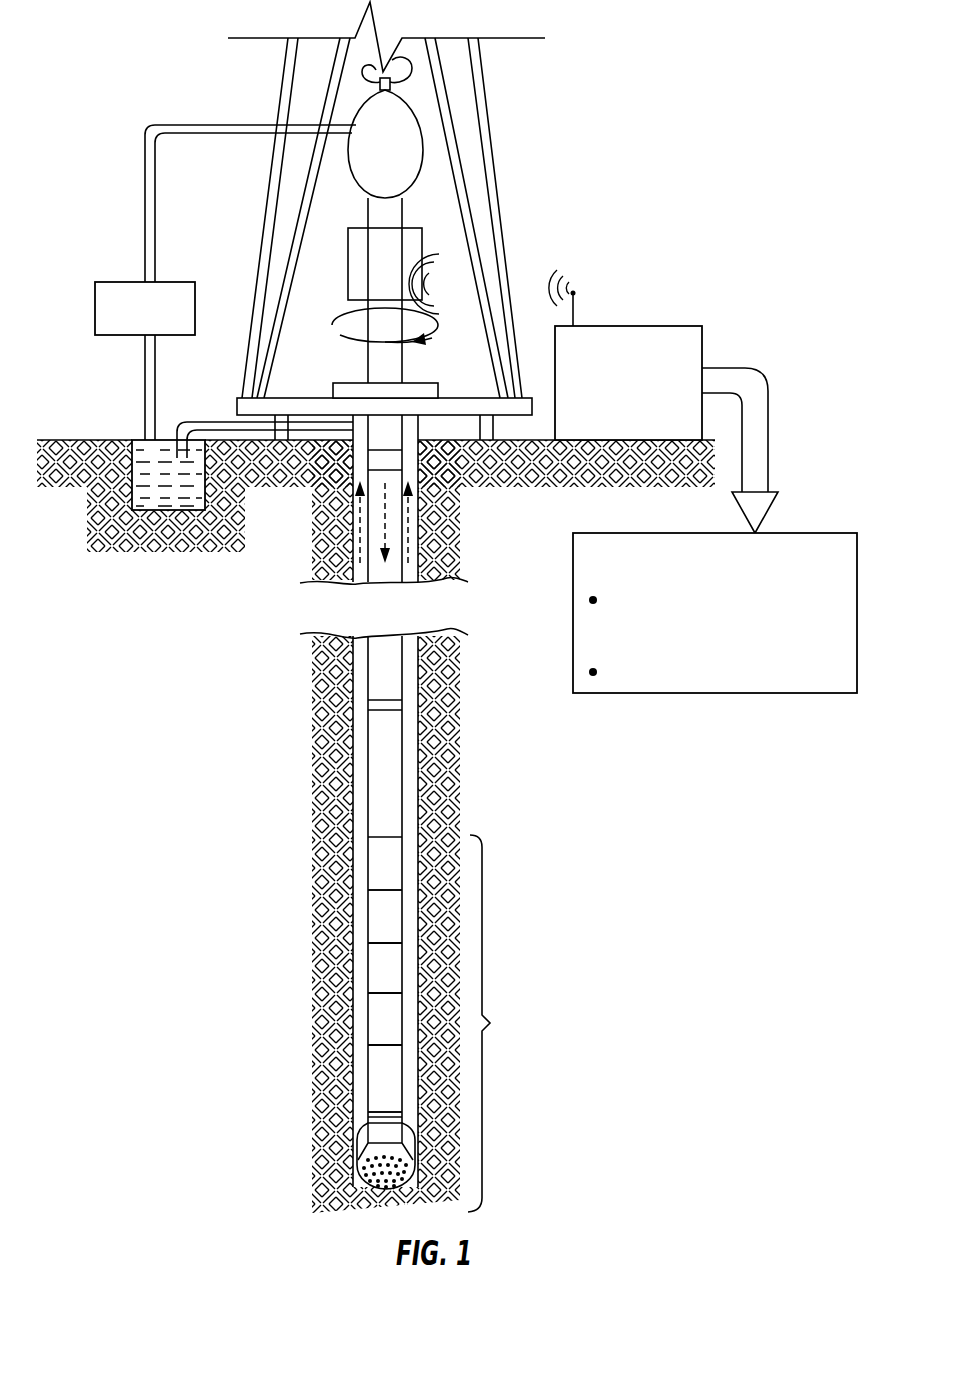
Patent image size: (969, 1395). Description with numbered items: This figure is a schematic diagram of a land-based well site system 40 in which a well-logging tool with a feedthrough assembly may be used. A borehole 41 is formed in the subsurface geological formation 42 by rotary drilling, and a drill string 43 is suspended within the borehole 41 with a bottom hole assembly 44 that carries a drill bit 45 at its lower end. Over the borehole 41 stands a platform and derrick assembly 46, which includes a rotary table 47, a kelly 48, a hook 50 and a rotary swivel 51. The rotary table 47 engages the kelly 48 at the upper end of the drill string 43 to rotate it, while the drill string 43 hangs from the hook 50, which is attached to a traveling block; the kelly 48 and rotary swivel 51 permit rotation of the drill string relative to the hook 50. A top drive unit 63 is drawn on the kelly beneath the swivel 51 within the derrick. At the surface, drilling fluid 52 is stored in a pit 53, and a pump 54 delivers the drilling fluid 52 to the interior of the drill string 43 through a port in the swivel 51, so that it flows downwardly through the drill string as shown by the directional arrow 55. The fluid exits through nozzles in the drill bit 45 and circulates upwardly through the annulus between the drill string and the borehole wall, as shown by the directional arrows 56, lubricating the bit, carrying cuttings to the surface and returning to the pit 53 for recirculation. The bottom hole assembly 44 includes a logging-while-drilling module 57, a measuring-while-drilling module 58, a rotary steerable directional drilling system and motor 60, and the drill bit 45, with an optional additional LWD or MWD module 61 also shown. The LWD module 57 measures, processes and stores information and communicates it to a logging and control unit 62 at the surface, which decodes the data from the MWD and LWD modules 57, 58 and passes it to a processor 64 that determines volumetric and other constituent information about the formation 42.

The well site system 40 is at (637, 119).
The borehole 41 is at (410, 428).
The geological formation 42 is at (551, 778).
The drill string 43 is at (383, 428).
The bottom hole assembly 44 is at (497, 1023).
The drill bit 45 is at (365, 1145).
The platform and derrick assembly 46 is at (509, 97).
The rotary table 47 is at (413, 392).
The kelly 48 is at (385, 358).
The hook 50 is at (410, 76).
The rotary swivel 51 is at (380, 157).
The drilling fluid 52 is at (163, 497).
The pit 53 is at (135, 438).
The pump 54 is at (110, 336).
The directional arrow 55 is at (385, 537).
The directional arrows 56 is at (357, 536).
The logging-while-drilling module 57 is at (383, 920).
The measuring-while-drilling module 58 is at (378, 975).
The rotary steerable directional drilling system and motor 60 is at (383, 1075).
The optional LWD and/or MWD module 61 is at (383, 1022).
The logging and control unit 62 is at (638, 326).
The top drive / kelly drive 63 is at (422, 242).
The processor 64 is at (782, 533).